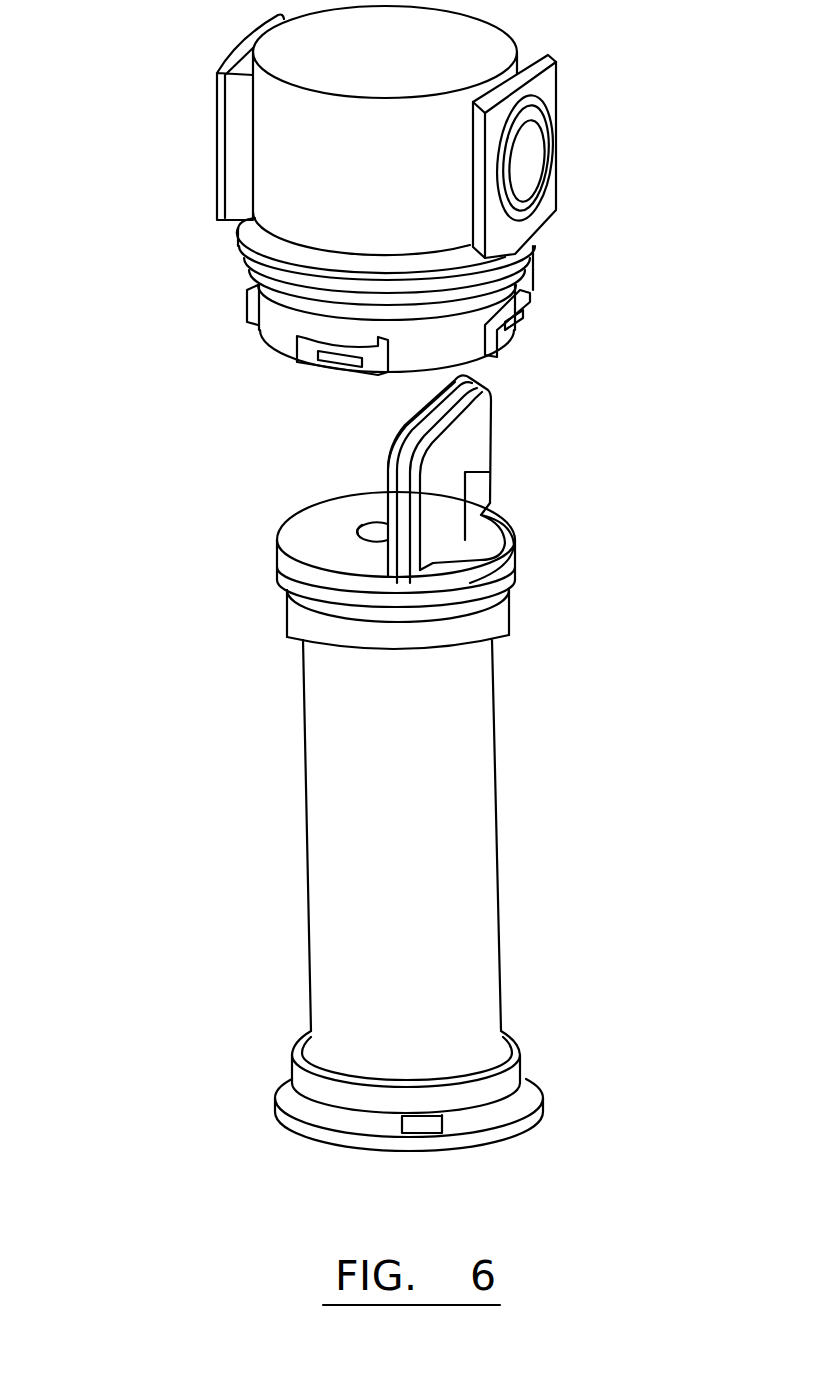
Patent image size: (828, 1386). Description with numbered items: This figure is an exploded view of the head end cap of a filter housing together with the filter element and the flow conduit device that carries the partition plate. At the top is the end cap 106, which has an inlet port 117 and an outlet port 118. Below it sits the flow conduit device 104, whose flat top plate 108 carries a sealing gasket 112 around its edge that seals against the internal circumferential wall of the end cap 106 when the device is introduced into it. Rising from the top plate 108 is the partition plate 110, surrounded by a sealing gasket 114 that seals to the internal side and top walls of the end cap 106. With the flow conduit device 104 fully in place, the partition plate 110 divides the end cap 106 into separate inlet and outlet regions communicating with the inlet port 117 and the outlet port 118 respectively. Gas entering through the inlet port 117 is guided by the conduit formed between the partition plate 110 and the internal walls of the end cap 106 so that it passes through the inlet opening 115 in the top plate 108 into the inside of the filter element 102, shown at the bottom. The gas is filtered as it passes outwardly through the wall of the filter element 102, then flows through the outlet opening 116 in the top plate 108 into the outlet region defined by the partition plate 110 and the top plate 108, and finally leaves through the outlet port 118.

The filter element 102 is at (430, 785).
The flow conduit device 104 is at (402, 536).
The end cap 106 is at (313, 622).
The top plate 108 is at (358, 505).
The partition plate 110 is at (554, 455).
The sealing gasket 112 is at (473, 587).
The sealing gasket 114 is at (457, 405).
The inlet opening 115 is at (377, 533).
The outlet opening 116 is at (467, 470).
The inlet port 117 is at (200, 125).
The outlet port 118 is at (527, 153).